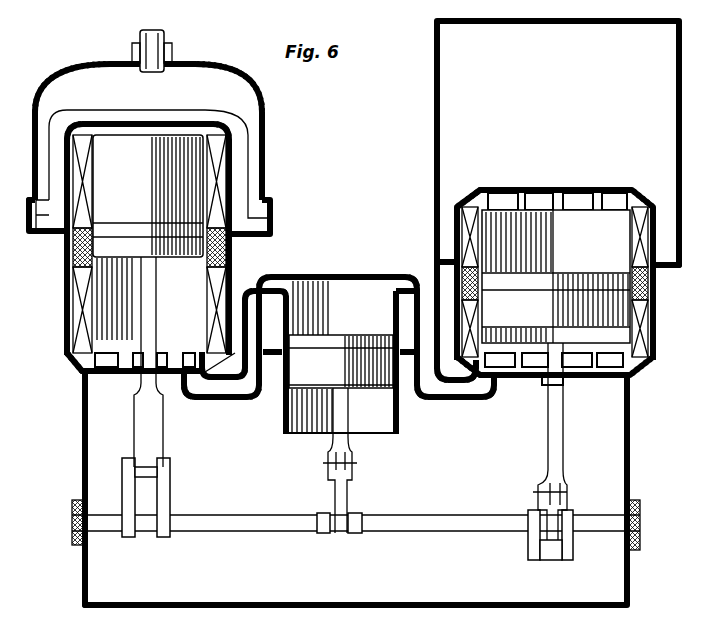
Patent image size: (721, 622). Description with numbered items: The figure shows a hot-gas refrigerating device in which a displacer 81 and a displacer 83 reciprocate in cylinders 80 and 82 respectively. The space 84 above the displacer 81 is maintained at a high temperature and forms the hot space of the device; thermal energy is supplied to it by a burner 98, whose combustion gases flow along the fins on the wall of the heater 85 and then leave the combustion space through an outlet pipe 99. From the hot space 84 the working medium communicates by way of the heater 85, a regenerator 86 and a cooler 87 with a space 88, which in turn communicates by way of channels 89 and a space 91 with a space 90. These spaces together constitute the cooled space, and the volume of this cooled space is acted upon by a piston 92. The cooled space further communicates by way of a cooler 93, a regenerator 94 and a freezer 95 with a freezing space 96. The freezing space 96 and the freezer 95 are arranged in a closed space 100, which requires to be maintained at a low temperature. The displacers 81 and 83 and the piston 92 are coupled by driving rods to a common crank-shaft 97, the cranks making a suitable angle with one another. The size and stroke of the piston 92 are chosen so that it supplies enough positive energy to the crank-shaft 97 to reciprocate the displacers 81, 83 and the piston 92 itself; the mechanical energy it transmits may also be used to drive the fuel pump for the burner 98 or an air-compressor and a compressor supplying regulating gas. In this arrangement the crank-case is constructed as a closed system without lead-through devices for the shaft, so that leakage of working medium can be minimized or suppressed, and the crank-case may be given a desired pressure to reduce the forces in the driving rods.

The cylinder 80 is at (213, 173).
The displacer 81 is at (212, 130).
The cylinder 82 is at (455, 298).
The displacer 83 is at (613, 350).
The space 84 is at (107, 127).
The heater 85 is at (268, 200).
The regenerator 86 is at (232, 247).
The cooler 87 is at (221, 280).
The space 88 is at (105, 335).
The channels 89 is at (230, 384).
The space 90 is at (638, 378).
The space 91 is at (333, 287).
The piston 92 is at (300, 377).
The cooler 93 is at (465, 378).
The regenerator 94 is at (455, 262).
The freezer 95 is at (455, 228).
The freezing space 96 is at (458, 205).
The crank-shaft 97 is at (468, 523).
The burner 98 is at (165, 40).
The outlet pipe 99 is at (33, 220).
The closed space 100 is at (434, 122).